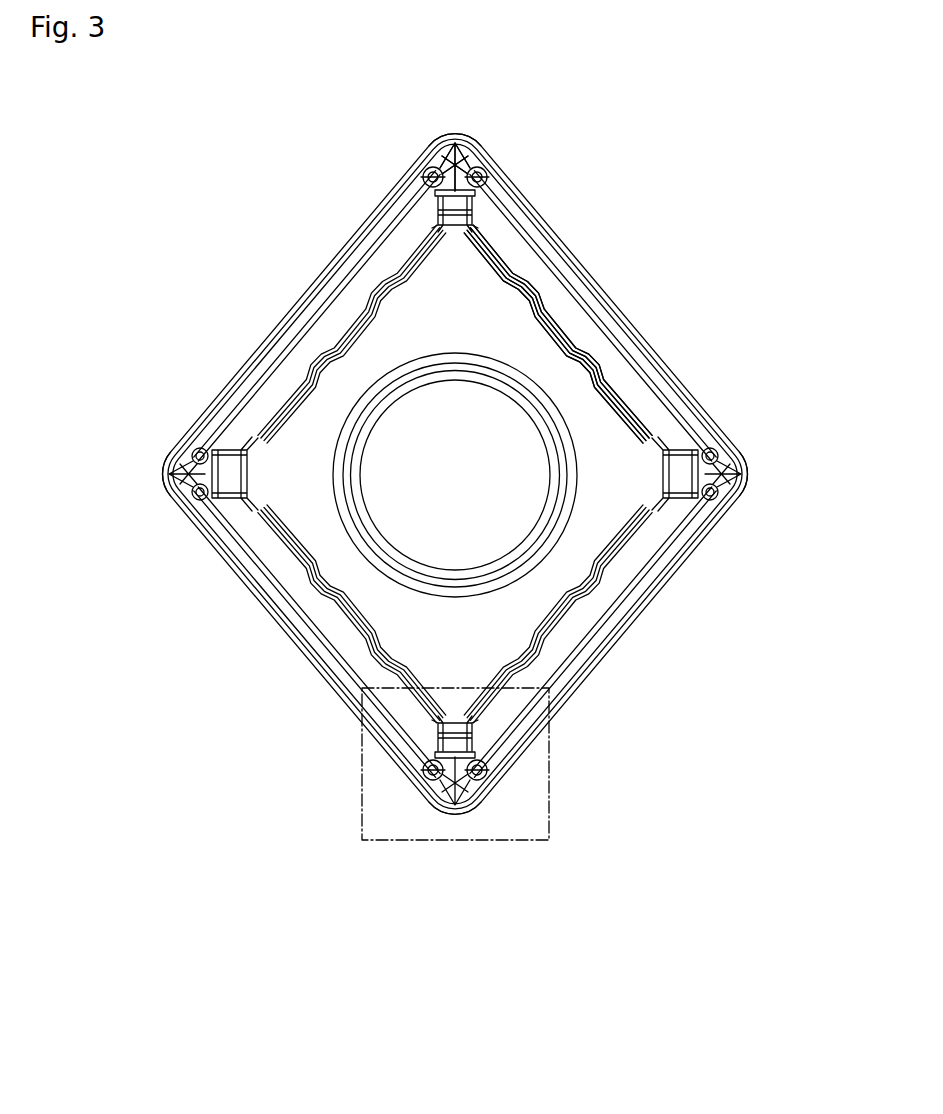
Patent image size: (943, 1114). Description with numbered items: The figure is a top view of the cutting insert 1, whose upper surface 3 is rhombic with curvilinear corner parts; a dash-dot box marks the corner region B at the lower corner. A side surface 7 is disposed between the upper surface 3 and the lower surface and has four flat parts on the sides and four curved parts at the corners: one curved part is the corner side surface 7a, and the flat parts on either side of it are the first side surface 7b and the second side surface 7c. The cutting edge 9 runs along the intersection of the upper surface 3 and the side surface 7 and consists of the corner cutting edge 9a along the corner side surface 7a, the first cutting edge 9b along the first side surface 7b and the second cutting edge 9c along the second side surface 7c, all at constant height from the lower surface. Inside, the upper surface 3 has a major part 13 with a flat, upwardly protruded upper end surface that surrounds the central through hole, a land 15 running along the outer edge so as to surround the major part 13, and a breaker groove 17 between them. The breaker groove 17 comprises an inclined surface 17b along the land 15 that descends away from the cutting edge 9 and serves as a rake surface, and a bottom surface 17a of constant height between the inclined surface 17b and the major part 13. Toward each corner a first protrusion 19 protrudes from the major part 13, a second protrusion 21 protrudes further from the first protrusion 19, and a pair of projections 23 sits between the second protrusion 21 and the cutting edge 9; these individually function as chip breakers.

The cutting insert 1 is at (455, 431).
The upper surface 3 is at (558, 334).
The side surface 7 is at (455, 140).
The corner side surface 7a is at (482, 864).
The first side surface 7b is at (230, 596).
The second side surface 7c is at (712, 590).
The cutting edge 9 is at (455, 167).
The corner cutting edge 9a is at (471, 514).
The first cutting edge 9b is at (255, 614).
The second cutting edge 9c is at (679, 598).
The major part 13 is at (607, 334).
The land 15 is at (558, 639).
The breaker groove 17 is at (453, 474).
The bottom surface 17a is at (453, 474).
The inclined surface 17b is at (453, 621).
The first protrusion 19 is at (394, 516).
The second protrusion 21 is at (503, 553).
The pair of projections 23 is at (503, 492).
The enlarged region B is at (484, 816).